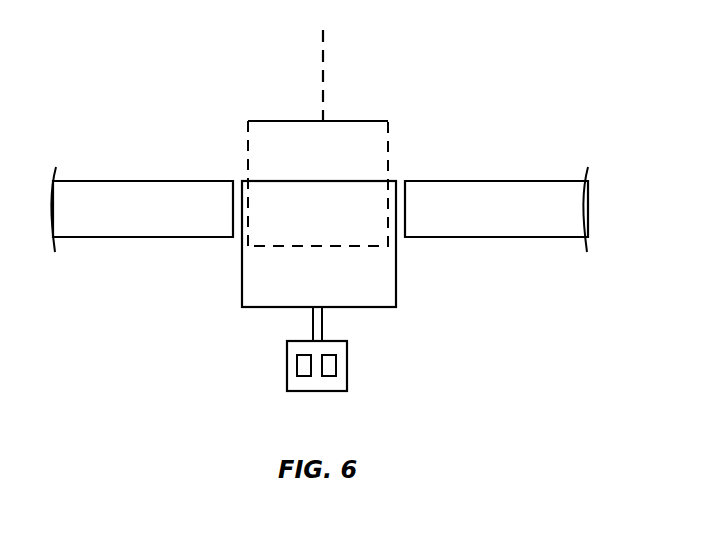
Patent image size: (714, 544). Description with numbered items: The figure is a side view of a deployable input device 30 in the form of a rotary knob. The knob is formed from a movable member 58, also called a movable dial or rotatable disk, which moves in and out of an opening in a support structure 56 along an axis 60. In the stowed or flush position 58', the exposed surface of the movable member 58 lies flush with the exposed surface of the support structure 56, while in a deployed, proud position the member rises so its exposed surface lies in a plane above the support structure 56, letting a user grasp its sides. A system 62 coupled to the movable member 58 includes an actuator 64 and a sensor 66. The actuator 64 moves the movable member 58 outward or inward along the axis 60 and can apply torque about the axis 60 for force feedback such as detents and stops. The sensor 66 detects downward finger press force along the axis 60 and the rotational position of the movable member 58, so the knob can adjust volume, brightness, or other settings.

The device 30 is at (413, 155).
The support structure 56 is at (137, 195).
The movable member 58 is at (347, 244).
The flush position 58' is at (300, 183).
The axis 60 is at (323, 62).
The system 62 is at (360, 341).
The actuator 64 is at (303, 377).
The sensor 66 is at (330, 377).